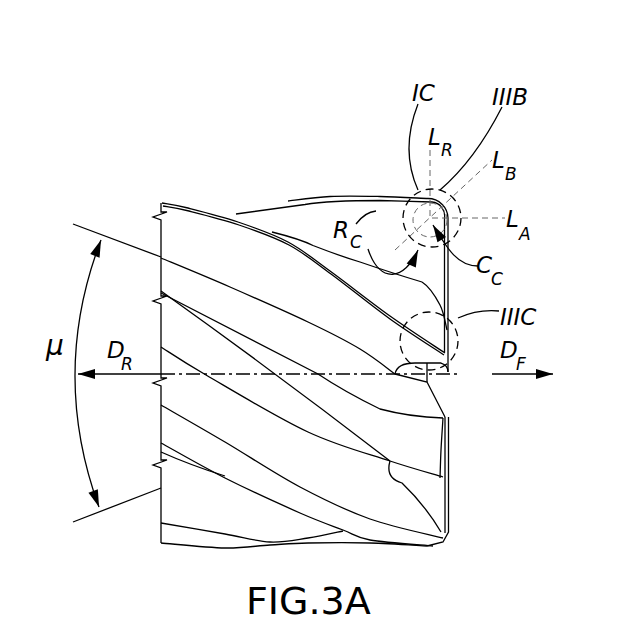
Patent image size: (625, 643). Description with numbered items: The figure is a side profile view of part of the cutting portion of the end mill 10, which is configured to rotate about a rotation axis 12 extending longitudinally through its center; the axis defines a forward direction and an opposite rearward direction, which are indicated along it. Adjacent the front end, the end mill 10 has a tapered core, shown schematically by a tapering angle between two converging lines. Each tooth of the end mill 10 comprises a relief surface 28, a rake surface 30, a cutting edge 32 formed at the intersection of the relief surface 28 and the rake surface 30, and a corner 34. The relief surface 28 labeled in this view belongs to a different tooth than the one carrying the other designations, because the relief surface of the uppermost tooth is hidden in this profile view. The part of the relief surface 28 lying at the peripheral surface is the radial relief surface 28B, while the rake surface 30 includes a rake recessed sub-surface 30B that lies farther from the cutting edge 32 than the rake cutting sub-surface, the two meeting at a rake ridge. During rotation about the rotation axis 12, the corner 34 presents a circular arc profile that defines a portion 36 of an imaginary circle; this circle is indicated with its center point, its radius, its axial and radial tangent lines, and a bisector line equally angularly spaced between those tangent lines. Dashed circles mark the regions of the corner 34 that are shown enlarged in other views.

The end mill 10 is at (316, 285).
The rotation axis 12 is at (315, 375).
The relief surface 28 is at (320, 258).
The radial relief surface 28B is at (300, 233).
The rake surface 30 is at (329, 212).
The rake recessed sub-surface 30B is at (392, 233).
The cutting edge 32 is at (346, 192).
The corner 34 is at (466, 136).
The portion of an imaginary circle 36 is at (458, 207).